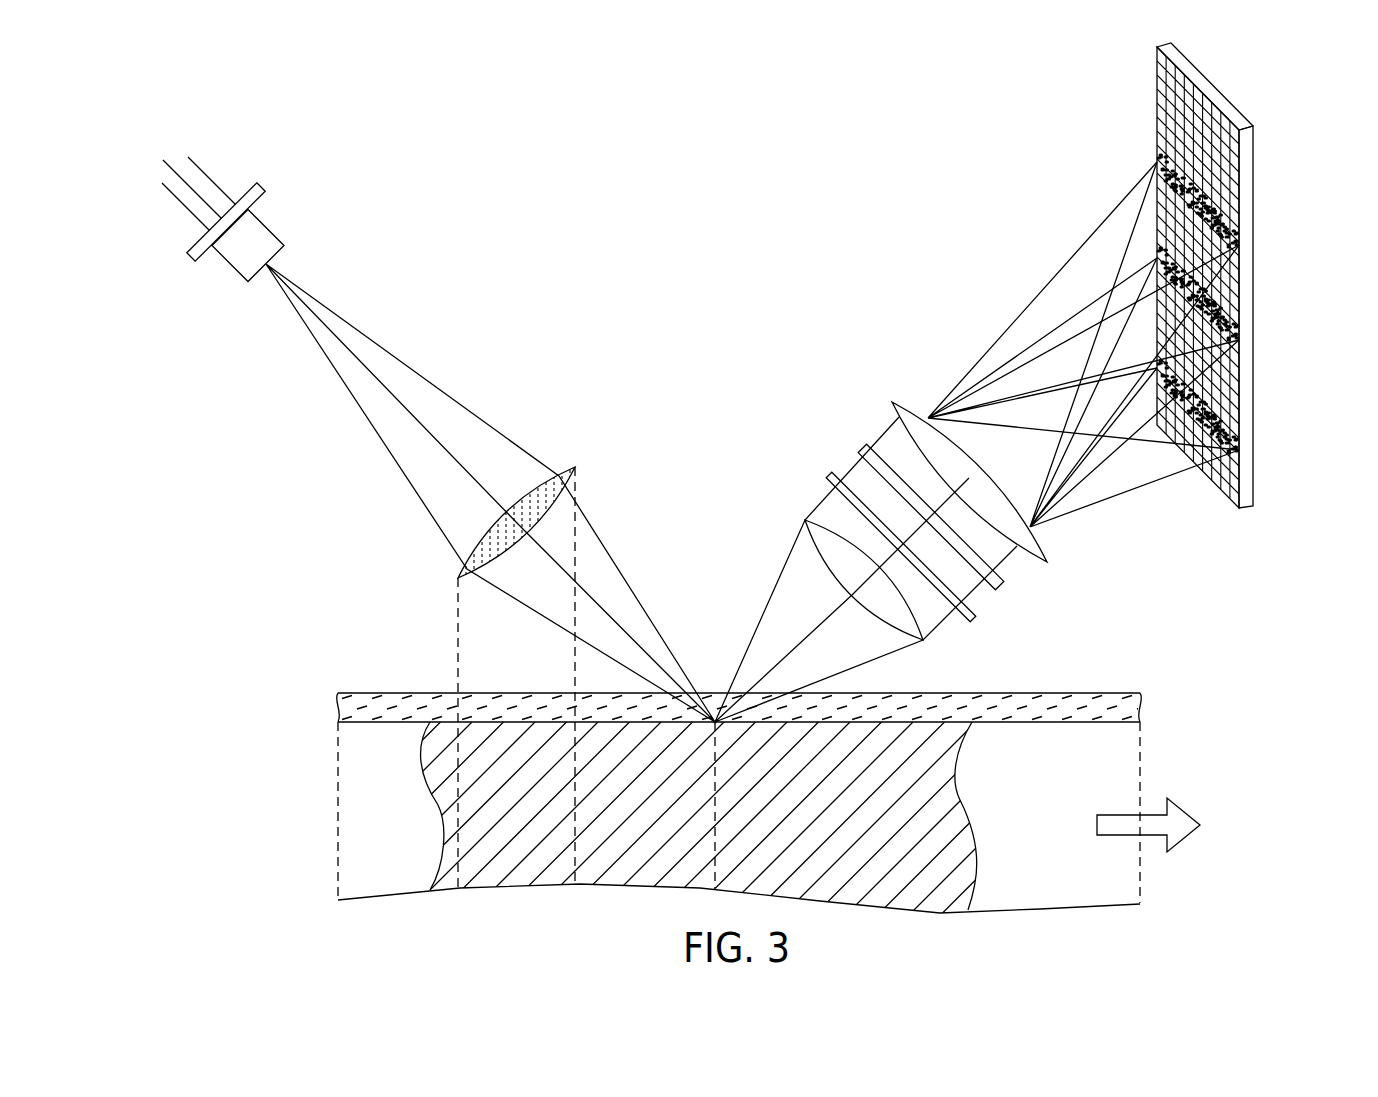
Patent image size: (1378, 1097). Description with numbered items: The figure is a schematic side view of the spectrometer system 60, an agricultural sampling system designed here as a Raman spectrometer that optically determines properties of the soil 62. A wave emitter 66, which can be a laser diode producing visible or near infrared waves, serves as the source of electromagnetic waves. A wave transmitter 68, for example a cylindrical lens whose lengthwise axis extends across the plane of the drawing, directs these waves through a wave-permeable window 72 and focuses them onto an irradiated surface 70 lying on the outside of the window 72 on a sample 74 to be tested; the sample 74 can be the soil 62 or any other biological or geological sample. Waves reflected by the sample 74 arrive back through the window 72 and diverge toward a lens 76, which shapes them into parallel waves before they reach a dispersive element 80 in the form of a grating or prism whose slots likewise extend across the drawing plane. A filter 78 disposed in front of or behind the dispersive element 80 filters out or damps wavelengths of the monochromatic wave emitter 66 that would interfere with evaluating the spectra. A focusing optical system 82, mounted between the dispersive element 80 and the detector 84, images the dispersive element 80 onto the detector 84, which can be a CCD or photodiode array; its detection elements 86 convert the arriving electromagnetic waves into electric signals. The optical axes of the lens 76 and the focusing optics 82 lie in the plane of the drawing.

The spectrometer system 60 is at (649, 150).
The soil 62 is at (715, 818).
The wave emitter 66 is at (279, 231).
The wave transmitter 68 is at (570, 468).
The irradiated surface 70 is at (715, 706).
The window 72 is at (407, 692).
The sample 74 is at (442, 776).
The lens 76 is at (805, 520).
The filter 78 is at (830, 475).
The dispersive element 80 is at (864, 448).
The focusing optical system 82 is at (893, 402).
The detector 84 is at (1147, 148).
The detection elements 86 is at (1171, 275).